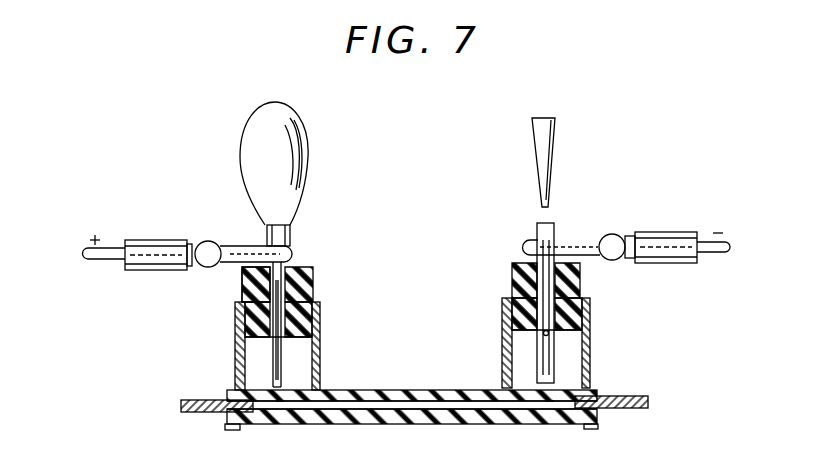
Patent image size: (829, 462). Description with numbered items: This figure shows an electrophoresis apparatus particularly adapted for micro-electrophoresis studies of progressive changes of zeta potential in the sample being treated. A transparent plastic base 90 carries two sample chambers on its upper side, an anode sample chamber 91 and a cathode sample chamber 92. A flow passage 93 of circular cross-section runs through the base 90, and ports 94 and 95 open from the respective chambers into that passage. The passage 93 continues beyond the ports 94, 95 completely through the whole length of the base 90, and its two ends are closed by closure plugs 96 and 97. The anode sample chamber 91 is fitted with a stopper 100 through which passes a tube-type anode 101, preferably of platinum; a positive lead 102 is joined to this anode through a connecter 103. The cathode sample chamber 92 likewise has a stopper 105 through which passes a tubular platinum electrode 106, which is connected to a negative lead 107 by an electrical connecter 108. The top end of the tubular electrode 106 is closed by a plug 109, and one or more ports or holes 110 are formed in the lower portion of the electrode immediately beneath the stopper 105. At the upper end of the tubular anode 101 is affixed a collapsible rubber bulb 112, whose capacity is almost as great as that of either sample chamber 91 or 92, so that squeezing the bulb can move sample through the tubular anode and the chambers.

The transparent plastic base 90 is at (411, 421).
The anode sample chamber 91 is at (236, 358).
The cathode sample chamber 92 is at (565, 343).
The flow passage 93 is at (412, 382).
The port 94 is at (294, 426).
The port 95 is at (566, 427).
The closure plug 96 is at (196, 411).
The closure plug 97 is at (633, 407).
The stopper 100 is at (305, 302).
The tube-type anode 101 is at (232, 284).
The positive lead 102 is at (138, 267).
The connecter 103 is at (243, 298).
The stopper 105 is at (512, 276).
The tubular platinum electrode 106 is at (555, 223).
The negative lead 107 is at (679, 259).
The electrical connecter 108 is at (614, 261).
The plug 109 is at (550, 146).
The ports or holes 110 is at (507, 349).
The collapsible rubber bulb 112 is at (292, 165).